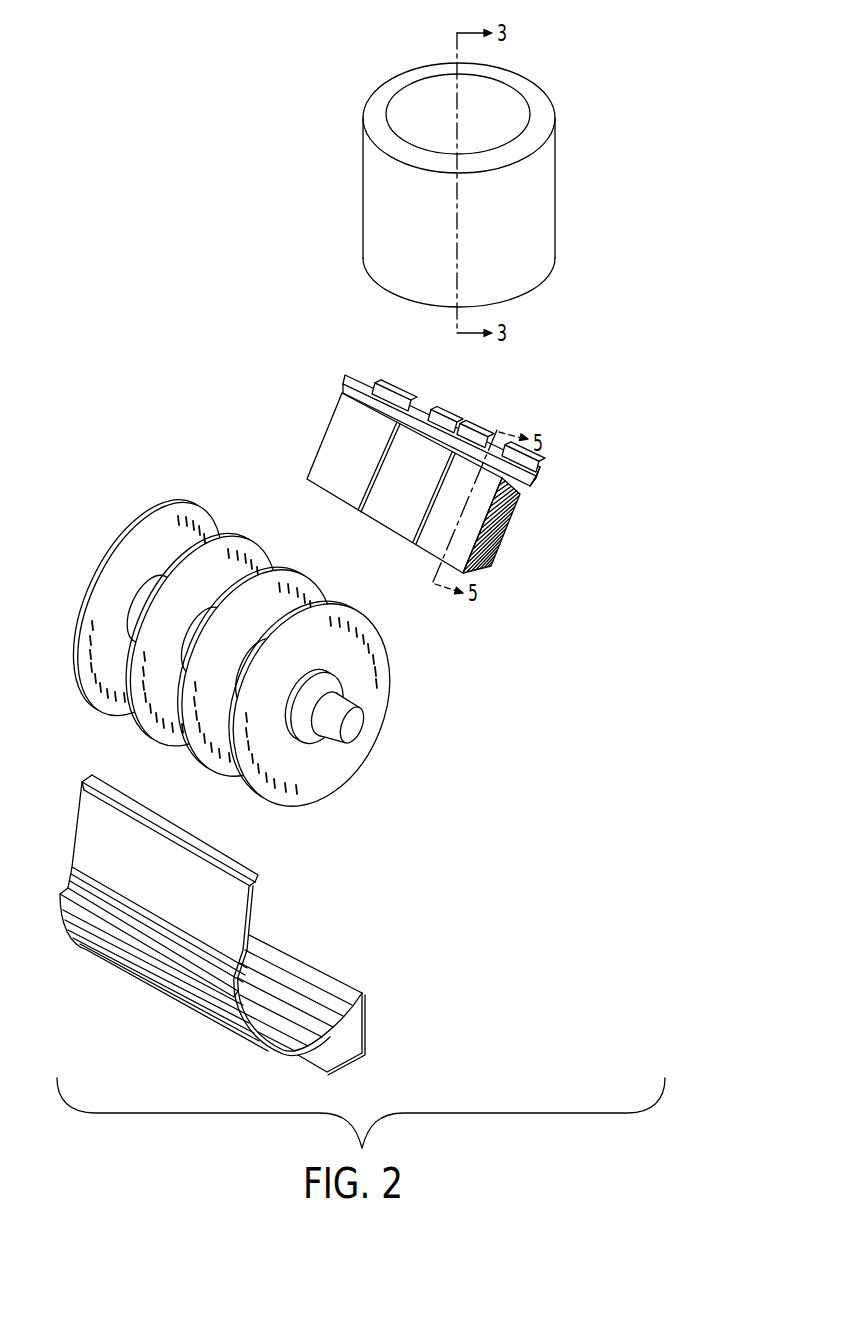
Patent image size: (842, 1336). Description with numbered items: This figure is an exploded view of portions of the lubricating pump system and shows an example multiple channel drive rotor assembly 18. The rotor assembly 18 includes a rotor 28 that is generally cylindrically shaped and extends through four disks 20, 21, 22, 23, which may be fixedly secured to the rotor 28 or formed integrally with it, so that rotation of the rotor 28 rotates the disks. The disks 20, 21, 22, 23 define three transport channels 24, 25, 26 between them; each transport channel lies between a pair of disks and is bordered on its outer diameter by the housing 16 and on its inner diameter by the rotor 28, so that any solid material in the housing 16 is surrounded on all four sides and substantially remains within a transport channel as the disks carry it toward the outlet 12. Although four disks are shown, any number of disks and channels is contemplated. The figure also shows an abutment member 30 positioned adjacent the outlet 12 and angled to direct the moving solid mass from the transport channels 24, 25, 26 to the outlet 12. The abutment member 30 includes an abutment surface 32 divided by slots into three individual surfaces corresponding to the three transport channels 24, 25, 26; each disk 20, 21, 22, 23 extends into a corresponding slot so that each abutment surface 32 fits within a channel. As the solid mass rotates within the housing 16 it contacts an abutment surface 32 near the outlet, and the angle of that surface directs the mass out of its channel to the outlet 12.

The outlet 12 is at (368, 64).
The housing 16 is at (157, 990).
The rotor assembly 18 is at (231, 645).
The disk 20 is at (375, 610).
The disk 21 is at (315, 573).
The disk 22 is at (267, 540).
The disk 23 is at (213, 510).
The transport channel 24 is at (110, 690).
The transport channel 25 is at (162, 722).
The transport channel 26 is at (214, 754).
The rotor 28 is at (353, 731).
The abutment member 30 is at (417, 469).
The abutment surface 32 is at (364, 410).